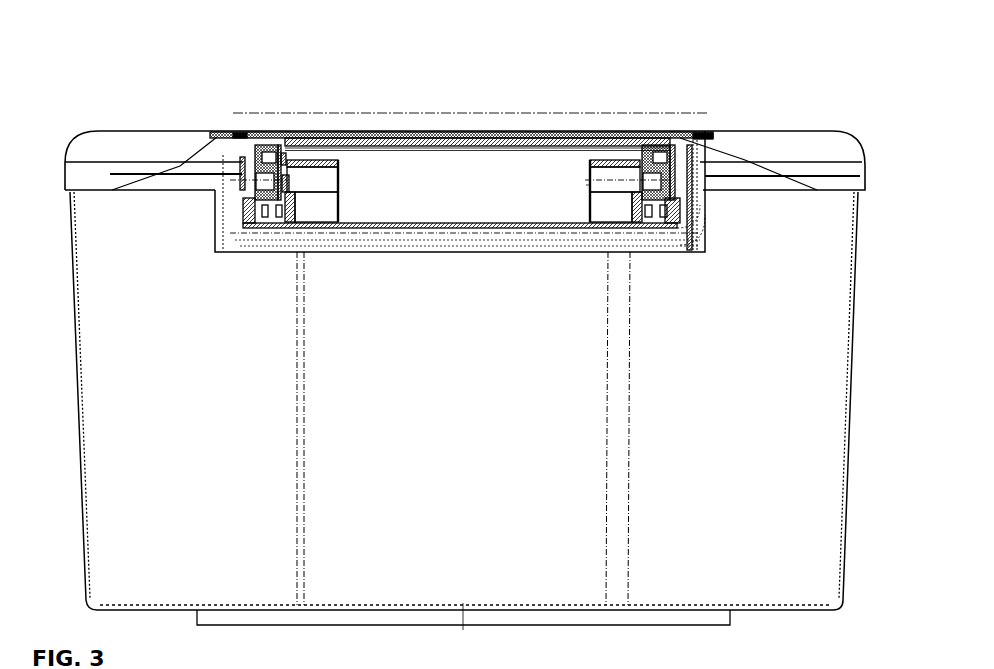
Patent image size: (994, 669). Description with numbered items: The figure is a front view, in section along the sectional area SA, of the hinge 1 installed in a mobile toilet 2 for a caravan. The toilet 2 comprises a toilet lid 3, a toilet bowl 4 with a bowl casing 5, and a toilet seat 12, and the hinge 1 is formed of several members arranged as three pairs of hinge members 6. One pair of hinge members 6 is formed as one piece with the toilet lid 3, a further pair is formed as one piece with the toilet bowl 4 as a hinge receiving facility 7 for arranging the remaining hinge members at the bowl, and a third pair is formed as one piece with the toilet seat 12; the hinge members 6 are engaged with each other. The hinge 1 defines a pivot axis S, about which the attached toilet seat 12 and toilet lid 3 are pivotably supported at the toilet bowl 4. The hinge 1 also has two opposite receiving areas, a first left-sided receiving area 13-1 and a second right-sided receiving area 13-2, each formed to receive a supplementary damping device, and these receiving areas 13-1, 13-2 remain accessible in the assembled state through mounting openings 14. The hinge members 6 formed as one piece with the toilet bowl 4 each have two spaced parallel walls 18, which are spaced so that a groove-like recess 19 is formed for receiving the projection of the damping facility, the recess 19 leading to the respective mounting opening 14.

The hinge 1 is at (490, 76).
The mobile toilet 2 is at (140, 105).
The toilet lid 3 is at (267, 187).
The toilet bowl 4 is at (707, 182).
The bowl casing 5 is at (90, 405).
The hinge members 6 is at (263, 158).
The hinge receiving facility 7 is at (663, 157).
The toilet seat 12 is at (366, 145).
The first left-sided receiving area 13-1 is at (324, 170).
The second right-sided receiving area 13-2 is at (618, 165).
The mounting openings 14 is at (368, 176).
The parallel walls 18 is at (595, 210).
The groove-like recess 19 is at (603, 192).
The sectional area SA is at (457, 106).
The pivot axis S is at (580, 190).